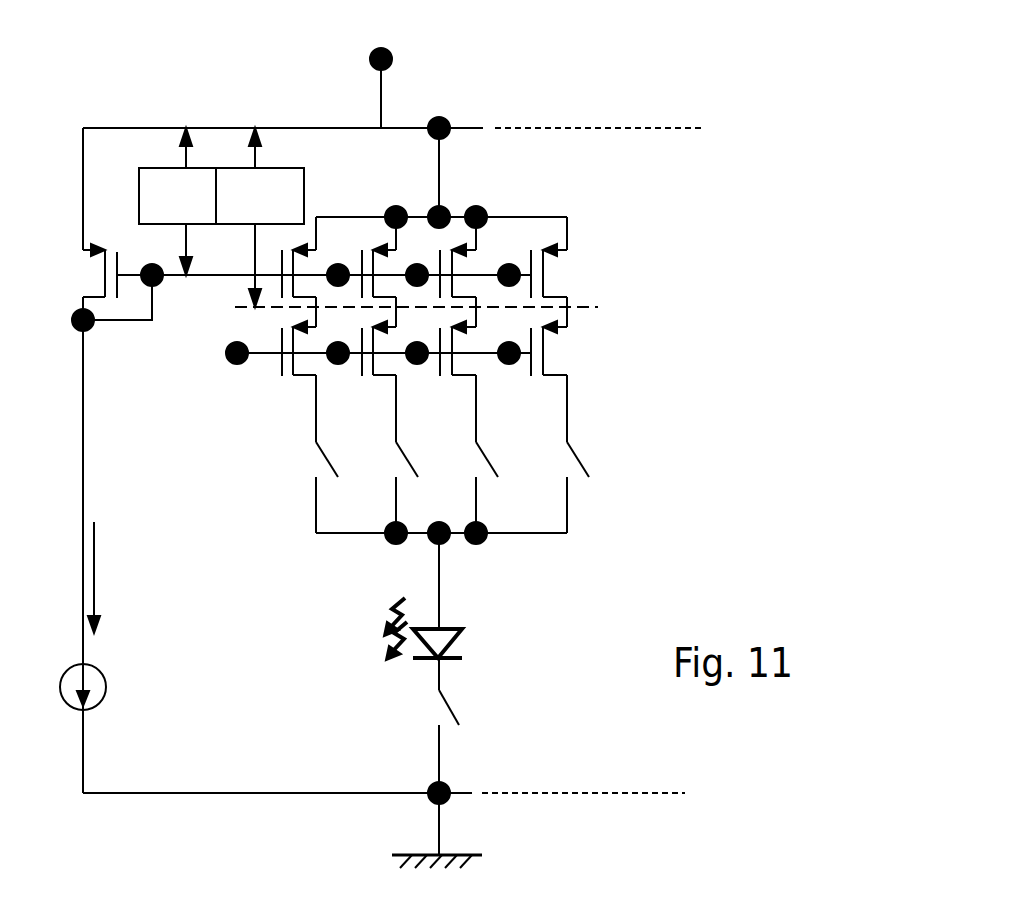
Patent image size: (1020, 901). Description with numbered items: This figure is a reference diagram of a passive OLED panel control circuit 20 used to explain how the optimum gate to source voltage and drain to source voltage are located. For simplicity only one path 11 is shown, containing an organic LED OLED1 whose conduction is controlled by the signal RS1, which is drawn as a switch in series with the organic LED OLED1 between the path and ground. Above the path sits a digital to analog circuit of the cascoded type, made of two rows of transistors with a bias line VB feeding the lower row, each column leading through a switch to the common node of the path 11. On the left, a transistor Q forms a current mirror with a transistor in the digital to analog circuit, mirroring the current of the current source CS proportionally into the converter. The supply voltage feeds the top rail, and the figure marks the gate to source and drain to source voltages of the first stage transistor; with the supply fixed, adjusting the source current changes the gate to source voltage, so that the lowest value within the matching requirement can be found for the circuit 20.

The circuit 20 is at (669, 76).
The path 11 is at (438, 594).
The transistor Q is at (91, 224).
The current source CS is at (57, 687).
The bias voltage line VB is at (347, 357).
The organic LED OLED1 is at (372, 629).
The signal RS1 is at (412, 724).